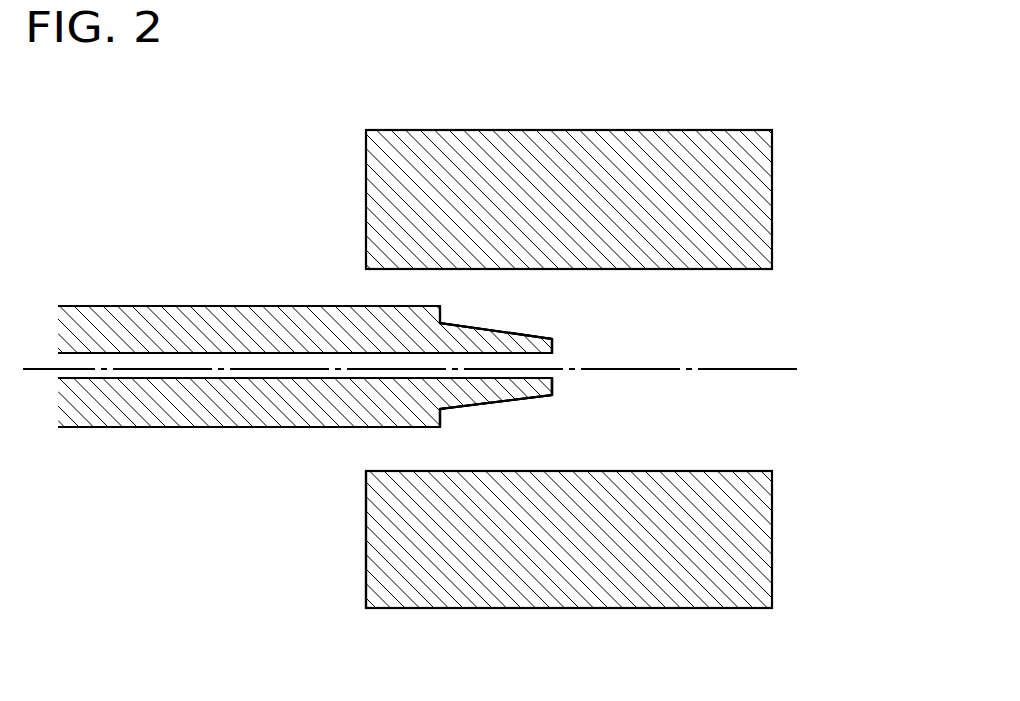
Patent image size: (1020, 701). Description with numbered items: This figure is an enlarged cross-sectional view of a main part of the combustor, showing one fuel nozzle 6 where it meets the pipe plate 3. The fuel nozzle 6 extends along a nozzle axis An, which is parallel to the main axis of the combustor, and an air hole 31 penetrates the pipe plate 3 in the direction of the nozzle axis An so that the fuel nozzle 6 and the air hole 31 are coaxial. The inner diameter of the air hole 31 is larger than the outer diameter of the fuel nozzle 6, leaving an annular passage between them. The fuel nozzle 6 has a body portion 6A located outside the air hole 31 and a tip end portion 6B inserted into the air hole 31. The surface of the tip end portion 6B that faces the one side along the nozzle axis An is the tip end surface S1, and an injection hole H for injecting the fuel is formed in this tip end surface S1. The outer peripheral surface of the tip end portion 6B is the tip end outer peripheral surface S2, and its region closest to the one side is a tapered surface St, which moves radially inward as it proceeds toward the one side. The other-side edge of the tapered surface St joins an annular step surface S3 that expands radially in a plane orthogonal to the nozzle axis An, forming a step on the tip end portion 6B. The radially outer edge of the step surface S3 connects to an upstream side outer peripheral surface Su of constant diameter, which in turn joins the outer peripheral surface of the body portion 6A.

The pipe plate 3 is at (737, 170).
The air hole 31 is at (737, 270).
The fuel nozzle 6 is at (137, 300).
The body portion 6A is at (237, 306).
The tip end portion 6B is at (396, 306).
The tapered surface St is at (497, 330).
The injection hole H is at (553, 353).
The nozzle axis An is at (802, 369).
The upstream side outer peripheral surface Su is at (367, 495).
The step surface S3 is at (395, 427).
The tip end outer peripheral surface S2 is at (468, 416).
The tip end surface S1 is at (553, 383).